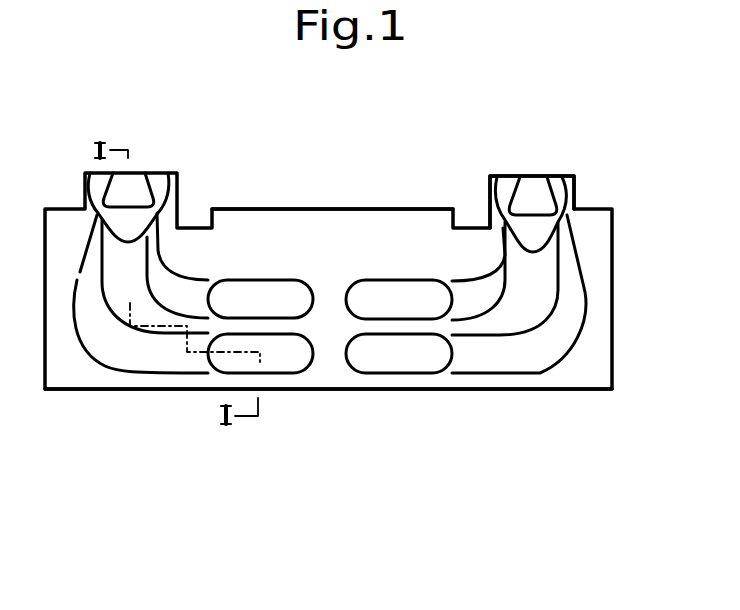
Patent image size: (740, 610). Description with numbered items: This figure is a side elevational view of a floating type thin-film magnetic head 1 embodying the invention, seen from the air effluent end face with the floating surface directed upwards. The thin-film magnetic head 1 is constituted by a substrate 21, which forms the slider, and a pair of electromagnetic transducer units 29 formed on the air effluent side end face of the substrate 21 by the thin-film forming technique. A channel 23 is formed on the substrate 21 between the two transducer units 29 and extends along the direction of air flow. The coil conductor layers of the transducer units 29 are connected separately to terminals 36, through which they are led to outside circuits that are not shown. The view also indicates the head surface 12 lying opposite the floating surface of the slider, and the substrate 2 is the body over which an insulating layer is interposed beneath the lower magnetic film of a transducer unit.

The thin-film magnetic head 1 is at (44, 105).
The substrate 2 is at (585, 375).
The surface of the magnetic head 12 is at (175, 390).
The substrate 21 is at (571, 181).
The channel 23 is at (371, 206).
The electromagnetic transducer unit 29 is at (141, 172).
The terminal 36 is at (290, 357).